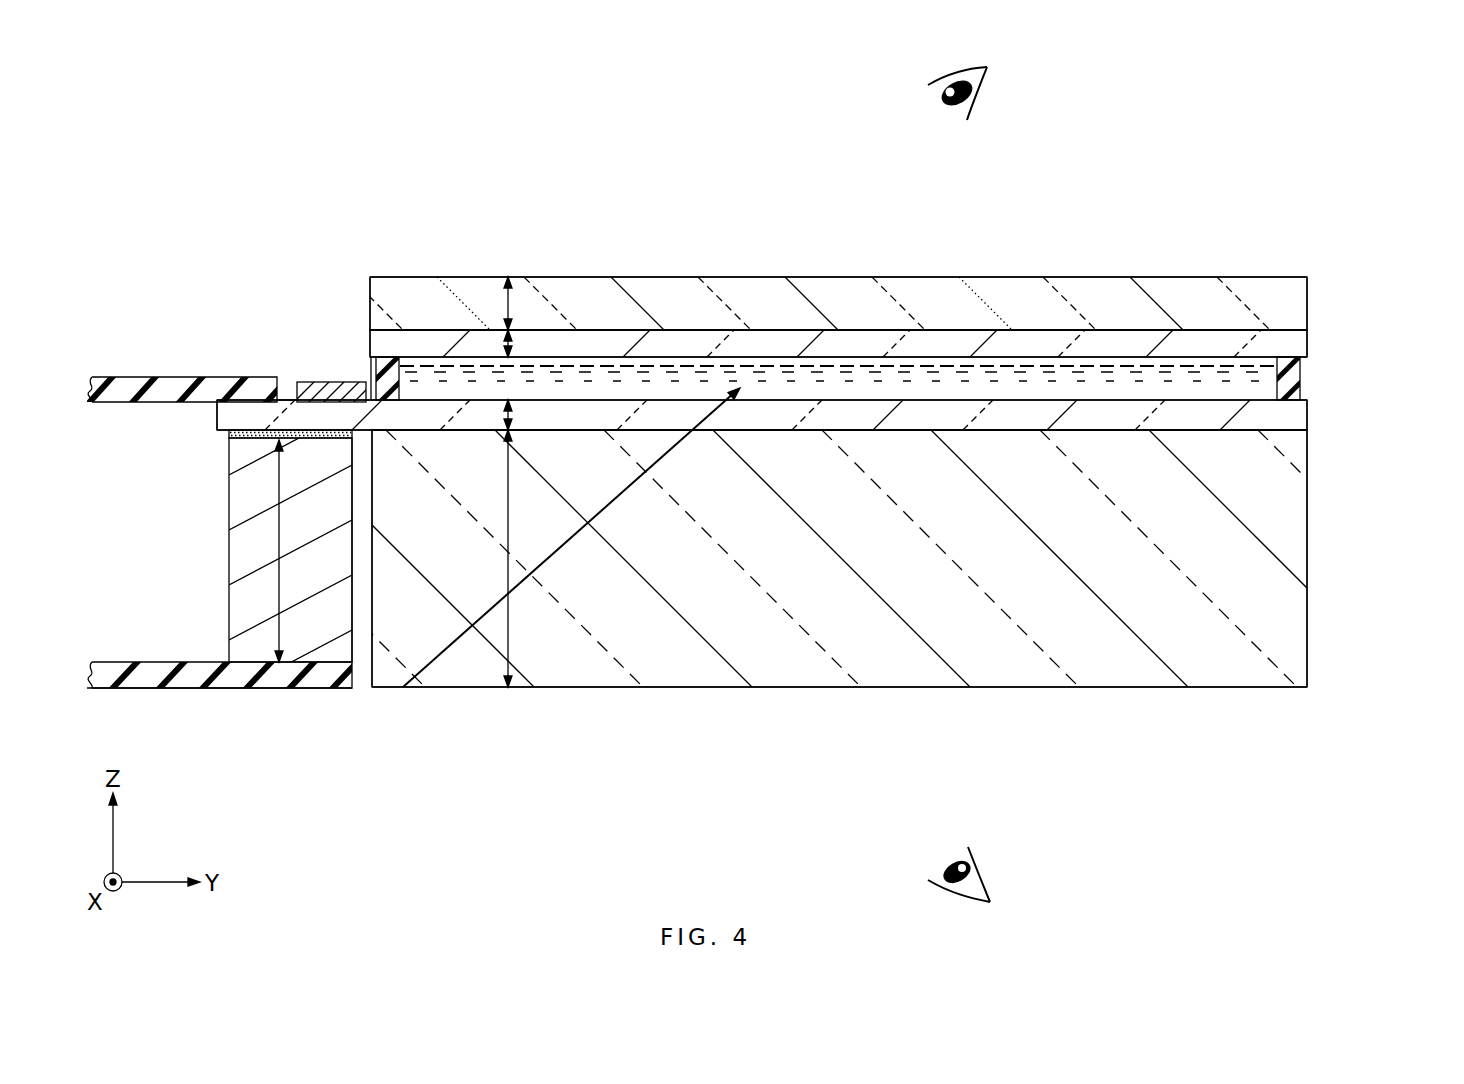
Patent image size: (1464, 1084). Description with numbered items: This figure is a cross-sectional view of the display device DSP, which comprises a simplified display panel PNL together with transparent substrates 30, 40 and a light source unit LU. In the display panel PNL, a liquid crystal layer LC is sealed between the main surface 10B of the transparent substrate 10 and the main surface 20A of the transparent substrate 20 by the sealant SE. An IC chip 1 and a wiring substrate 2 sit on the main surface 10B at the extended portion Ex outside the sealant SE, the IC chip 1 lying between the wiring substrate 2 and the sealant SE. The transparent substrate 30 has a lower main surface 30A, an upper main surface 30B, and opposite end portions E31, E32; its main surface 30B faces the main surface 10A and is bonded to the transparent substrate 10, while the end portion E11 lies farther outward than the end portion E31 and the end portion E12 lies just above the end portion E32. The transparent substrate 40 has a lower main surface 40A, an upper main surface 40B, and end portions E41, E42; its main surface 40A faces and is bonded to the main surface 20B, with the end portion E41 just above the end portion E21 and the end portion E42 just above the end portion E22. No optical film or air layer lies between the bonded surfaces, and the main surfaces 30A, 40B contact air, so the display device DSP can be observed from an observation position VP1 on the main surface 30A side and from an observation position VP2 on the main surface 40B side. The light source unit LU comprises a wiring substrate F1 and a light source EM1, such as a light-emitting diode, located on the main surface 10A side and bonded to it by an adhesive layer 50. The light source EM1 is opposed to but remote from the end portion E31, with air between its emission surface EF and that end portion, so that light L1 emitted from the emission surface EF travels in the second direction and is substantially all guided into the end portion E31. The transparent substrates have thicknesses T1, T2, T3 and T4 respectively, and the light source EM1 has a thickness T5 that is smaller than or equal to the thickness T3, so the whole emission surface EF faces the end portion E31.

The IC chip 1 is at (306, 382).
The wiring substrate 2 is at (122, 383).
The transparent substrate 10 is at (1085, 410).
The main surface 10A is at (603, 440).
The main surface 10B is at (607, 392).
The transparent substrate 20 is at (1030, 345).
The main surface 20A is at (728, 365).
The main surface 20B is at (700, 322).
The transparent substrate 30 is at (1141, 688).
The main surface 30A is at (893, 697).
The main surface 30B is at (921, 440).
The transparent substrate 40 is at (1118, 300).
The main surface 40A is at (856, 340).
The main surface 40B is at (823, 272).
The adhesive layer 50 is at (232, 441).
The display device DSP is at (775, 486).
The display panel PNL is at (805, 482).
The liquid crystal layer LC is at (960, 375).
The sealant SE is at (376, 373).
The end portion E11 is at (217, 405).
The end portion E12 is at (1308, 418).
The end portion E21 is at (370, 343).
The end portion E22 is at (1308, 342).
The end portion E31 is at (368, 684).
The end portion E32 is at (1308, 540).
The end portion E41 is at (370, 298).
The end portion E42 is at (1308, 300).
The light source EM1 is at (229, 553).
The emission surface EF is at (360, 600).
The extended portion Ex is at (288, 390).
The wiring substrate F1 is at (143, 688).
The light source unit LU is at (202, 720).
The light L1 is at (563, 552).
The thickness T1 is at (512, 414).
The thickness T2 is at (512, 344).
The thickness T3 is at (512, 522).
The thickness T4 is at (512, 303).
The thickness T5 is at (284, 530).
The observation position VP1 is at (986, 879).
The observation position VP2 is at (986, 90).